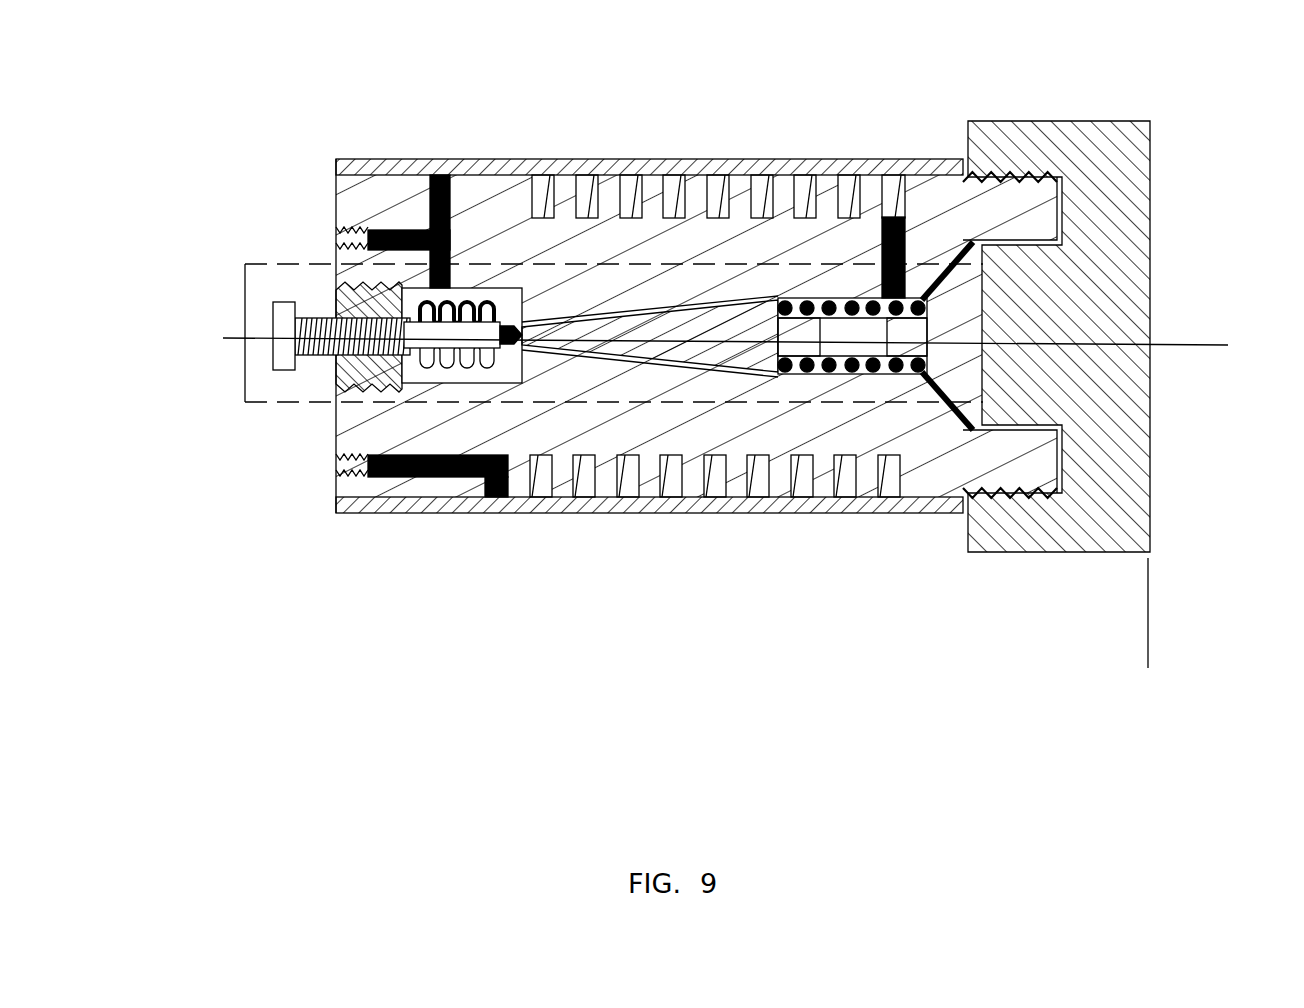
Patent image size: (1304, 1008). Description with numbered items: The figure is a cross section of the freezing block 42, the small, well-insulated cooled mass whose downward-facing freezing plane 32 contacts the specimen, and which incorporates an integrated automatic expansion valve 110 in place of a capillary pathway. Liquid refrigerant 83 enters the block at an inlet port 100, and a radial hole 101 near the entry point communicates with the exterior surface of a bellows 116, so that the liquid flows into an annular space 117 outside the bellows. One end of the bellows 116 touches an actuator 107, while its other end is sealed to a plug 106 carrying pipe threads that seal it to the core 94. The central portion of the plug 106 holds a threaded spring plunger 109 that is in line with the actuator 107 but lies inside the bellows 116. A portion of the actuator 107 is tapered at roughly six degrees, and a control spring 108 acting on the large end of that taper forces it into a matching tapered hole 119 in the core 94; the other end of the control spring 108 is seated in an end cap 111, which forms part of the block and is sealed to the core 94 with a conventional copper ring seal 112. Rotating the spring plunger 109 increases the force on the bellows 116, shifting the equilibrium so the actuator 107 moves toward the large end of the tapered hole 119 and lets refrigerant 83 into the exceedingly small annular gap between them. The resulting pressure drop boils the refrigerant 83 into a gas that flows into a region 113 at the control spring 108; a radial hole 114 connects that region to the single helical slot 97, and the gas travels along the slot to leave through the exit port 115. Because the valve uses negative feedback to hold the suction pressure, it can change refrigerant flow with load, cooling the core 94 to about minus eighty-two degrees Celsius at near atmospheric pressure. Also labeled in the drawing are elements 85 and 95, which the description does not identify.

The freezing plane 32 is at (1160, 620).
The freezing block 42 is at (109, 337).
The refrigerant 83 is at (324, 459).
The threaded port 85 is at (324, 246).
The core 94 is at (650, 225).
The outer wall 95 is at (866, 147).
The helical slot 97 is at (496, 507).
The inlet port 100 is at (315, 132).
The radial hole 101 is at (440, 160).
The plug 106 is at (377, 402).
The actuator 107 is at (670, 350).
The control spring 108 is at (786, 286).
The spring plunger 109 is at (261, 323).
The expansion valve 110 is at (720, 250).
The end cap 111 is at (1162, 275).
The copper ring seal 112 is at (750, 345).
The region 113 is at (885, 385).
The radial hole 114 is at (933, 164).
The exit port 115 is at (315, 562).
The bellows 116 is at (448, 395).
The annular space 117 is at (500, 276).
The tapered hole 119 is at (738, 382).